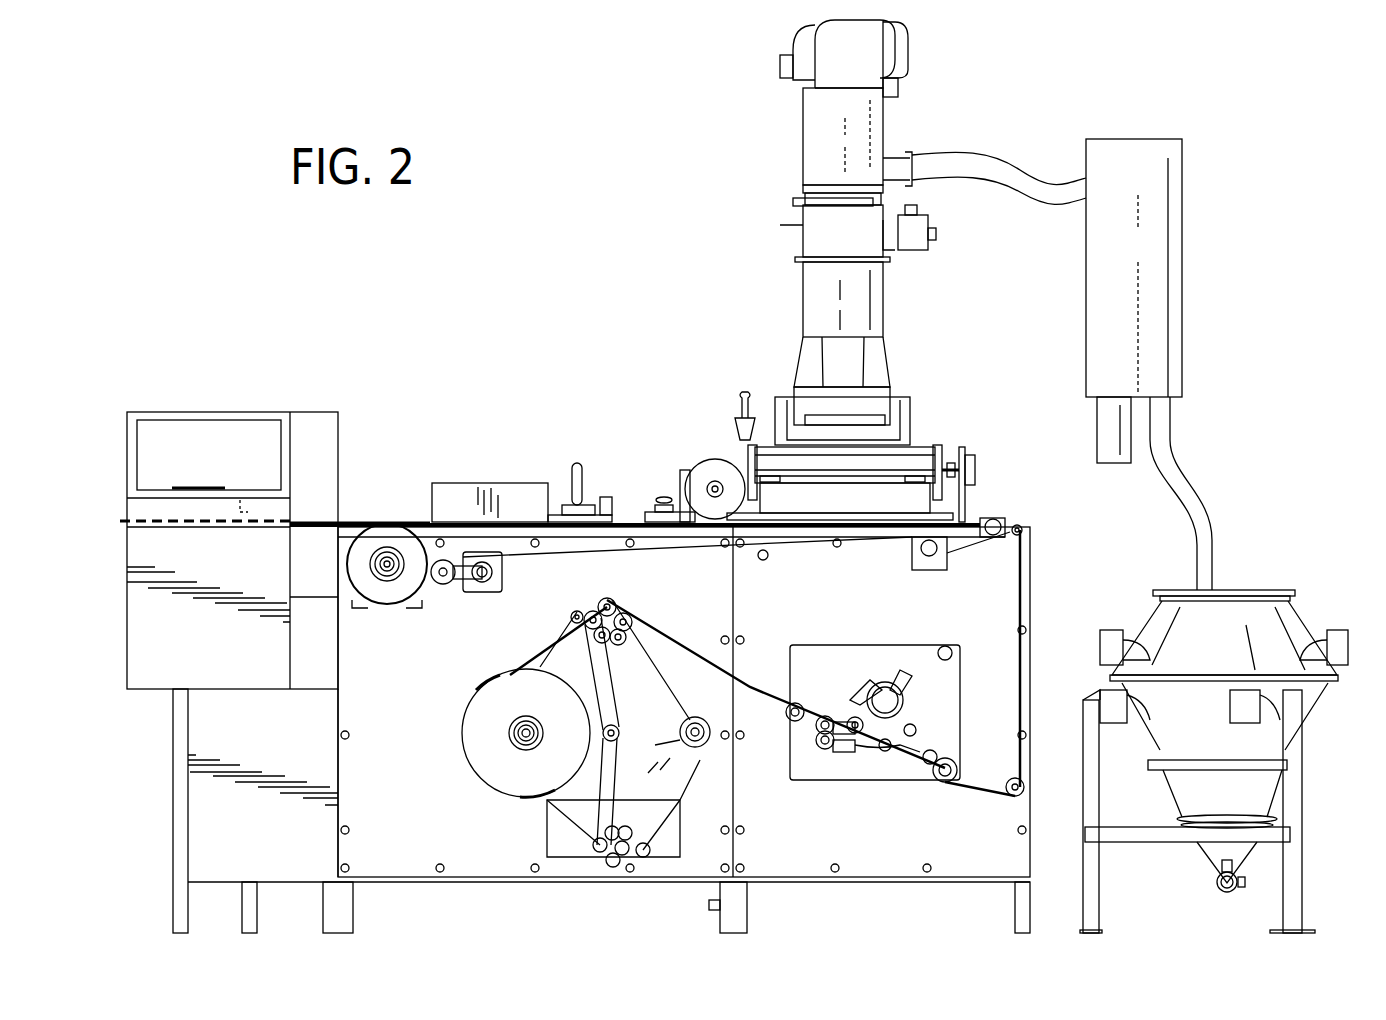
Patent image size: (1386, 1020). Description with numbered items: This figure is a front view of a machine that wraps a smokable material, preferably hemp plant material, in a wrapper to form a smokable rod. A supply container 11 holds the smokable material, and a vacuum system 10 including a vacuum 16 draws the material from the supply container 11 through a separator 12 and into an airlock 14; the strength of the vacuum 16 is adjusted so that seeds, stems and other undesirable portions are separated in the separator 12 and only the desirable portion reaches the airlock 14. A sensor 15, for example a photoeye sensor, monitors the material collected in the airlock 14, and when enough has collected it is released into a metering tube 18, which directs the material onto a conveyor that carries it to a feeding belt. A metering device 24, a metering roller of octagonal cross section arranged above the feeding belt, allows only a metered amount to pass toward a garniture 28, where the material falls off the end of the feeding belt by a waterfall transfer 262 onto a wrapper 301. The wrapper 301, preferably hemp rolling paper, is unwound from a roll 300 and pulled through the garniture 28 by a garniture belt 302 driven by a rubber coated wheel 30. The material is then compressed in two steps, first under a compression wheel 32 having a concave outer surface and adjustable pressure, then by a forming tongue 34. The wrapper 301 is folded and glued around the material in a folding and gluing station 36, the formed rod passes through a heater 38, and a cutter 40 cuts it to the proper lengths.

The vacuum system 10 is at (1117, 506).
The supply container 11 is at (1283, 590).
The separator 12 is at (1182, 276).
The airlock 14 is at (883, 125).
The sensor 15 is at (883, 297).
The vacuum 16 is at (795, 45).
The metering tube 18 is at (803, 300).
The metering device 24 is at (870, 430).
The waterfall transfer 262 is at (912, 460).
The garniture 28 is at (960, 515).
The rubber coated wheel 30 is at (385, 523).
The compression wheel 32 is at (715, 462).
The forming tongue 34 is at (662, 498).
The folding and gluing station 36 is at (620, 457).
The heater 38 is at (462, 483).
The cutter 40 is at (243, 512).
The roll 300 is at (498, 790).
The wrapper 301 is at (677, 644).
The garniture belt 302 is at (425, 583).